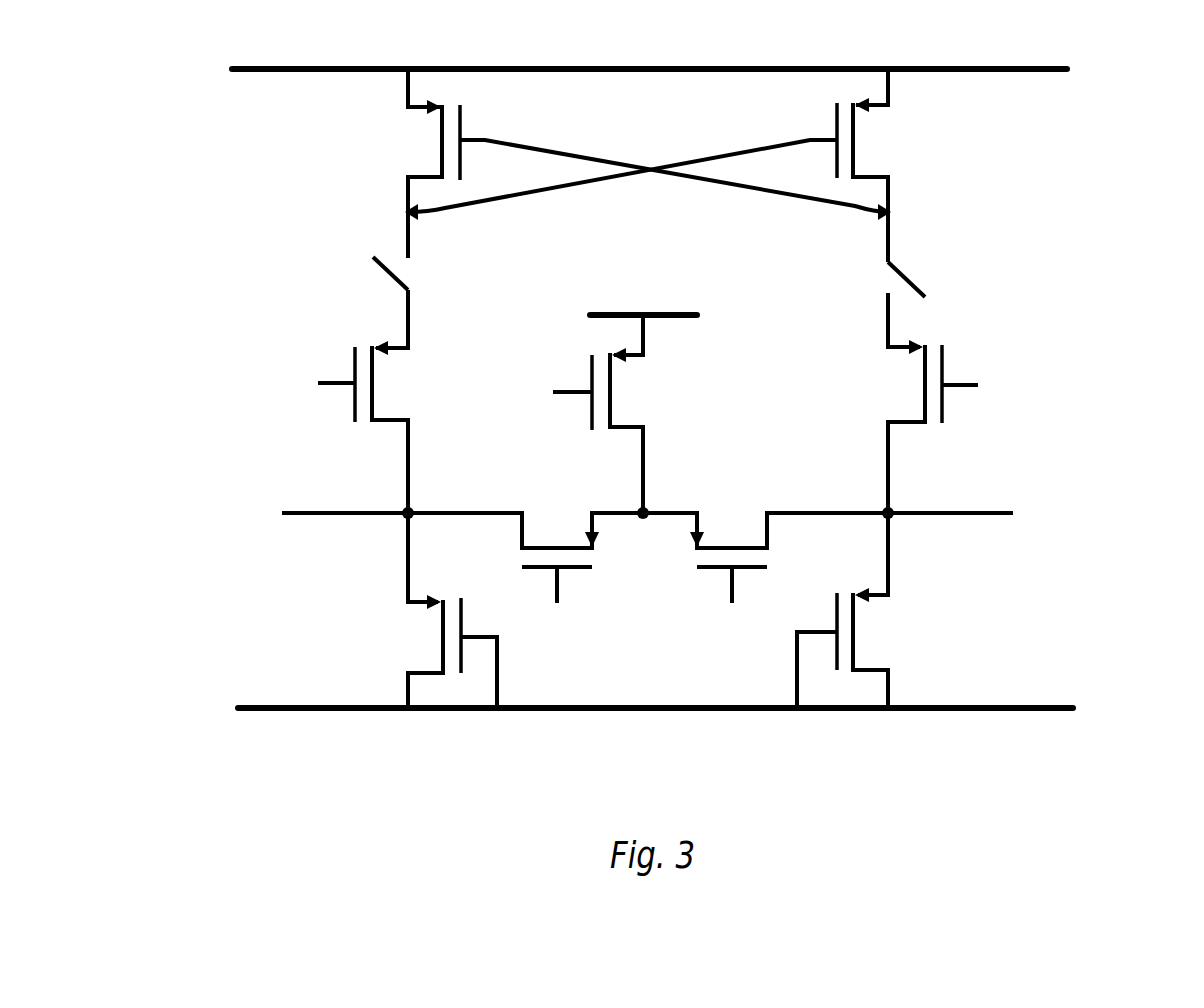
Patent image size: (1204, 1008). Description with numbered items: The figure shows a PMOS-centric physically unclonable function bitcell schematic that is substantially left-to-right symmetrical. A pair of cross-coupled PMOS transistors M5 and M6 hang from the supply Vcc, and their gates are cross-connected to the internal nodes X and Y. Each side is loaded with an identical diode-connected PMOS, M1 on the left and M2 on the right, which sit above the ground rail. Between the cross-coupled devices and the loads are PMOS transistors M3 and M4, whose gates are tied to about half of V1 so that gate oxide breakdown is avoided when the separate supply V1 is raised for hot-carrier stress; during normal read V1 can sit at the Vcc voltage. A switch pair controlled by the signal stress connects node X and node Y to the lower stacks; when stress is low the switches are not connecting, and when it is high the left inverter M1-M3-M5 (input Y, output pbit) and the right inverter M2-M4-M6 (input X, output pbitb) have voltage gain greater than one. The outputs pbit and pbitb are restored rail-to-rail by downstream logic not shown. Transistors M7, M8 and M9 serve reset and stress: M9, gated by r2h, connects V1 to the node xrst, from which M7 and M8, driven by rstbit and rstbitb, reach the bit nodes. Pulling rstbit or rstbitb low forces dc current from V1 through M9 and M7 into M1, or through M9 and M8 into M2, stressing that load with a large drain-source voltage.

The diode-connected PMOS M1 is at (437, 610).
The diode-connected PMOS M2 is at (857, 610).
The PMOS transistor M3 is at (314, 401).
The PMOS transistor M4 is at (987, 403).
The cross-coupled PMOS M5 is at (634, 140).
The cross-coupled PMOS M6 is at (662, 140).
The reset transistor M7 is at (525, 548).
The reset transistor M8 is at (765, 548).
The reset/stress transistor M9 is at (632, 414).
The supply voltage Vcc is at (687, 67).
The separate voltage supply V1 is at (671, 310).
The node X is at (394, 226).
The node Y is at (904, 228).
The output pbit is at (348, 497).
The output pbitb is at (947, 497).
The node xrst is at (644, 529).
The stress' signal stress is at (650, 270).
The r2h' signal r2h is at (542, 383).
The rstbit' input rstbit is at (565, 627).
The rstbitb' input rstbitb is at (734, 627).